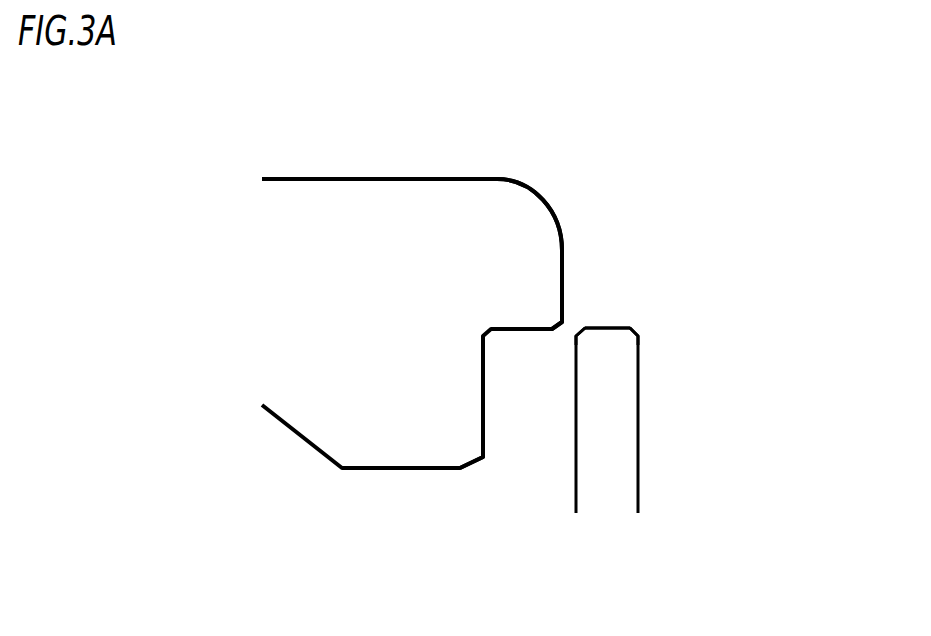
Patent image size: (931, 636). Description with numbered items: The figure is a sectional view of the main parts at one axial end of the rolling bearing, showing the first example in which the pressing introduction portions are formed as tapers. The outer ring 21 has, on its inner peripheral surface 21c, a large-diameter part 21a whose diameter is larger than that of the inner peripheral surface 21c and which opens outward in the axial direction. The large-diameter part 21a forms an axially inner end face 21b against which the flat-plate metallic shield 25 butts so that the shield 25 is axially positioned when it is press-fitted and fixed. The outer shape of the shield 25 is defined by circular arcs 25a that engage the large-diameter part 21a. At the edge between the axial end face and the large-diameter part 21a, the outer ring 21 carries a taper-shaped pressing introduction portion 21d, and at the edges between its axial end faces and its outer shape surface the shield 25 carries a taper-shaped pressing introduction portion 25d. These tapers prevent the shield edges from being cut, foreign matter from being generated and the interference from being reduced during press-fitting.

The outer ring 21 is at (341, 186).
The large-diameter part 21a is at (500, 329).
The axially inner end face 21b is at (483, 425).
The inner peripheral surface 21c is at (400, 470).
The pressing introduction portion 21d is at (567, 325).
The shield 25 is at (662, 441).
The circular arc 25a is at (610, 322).
The pressing introduction portion 25d is at (568, 333).